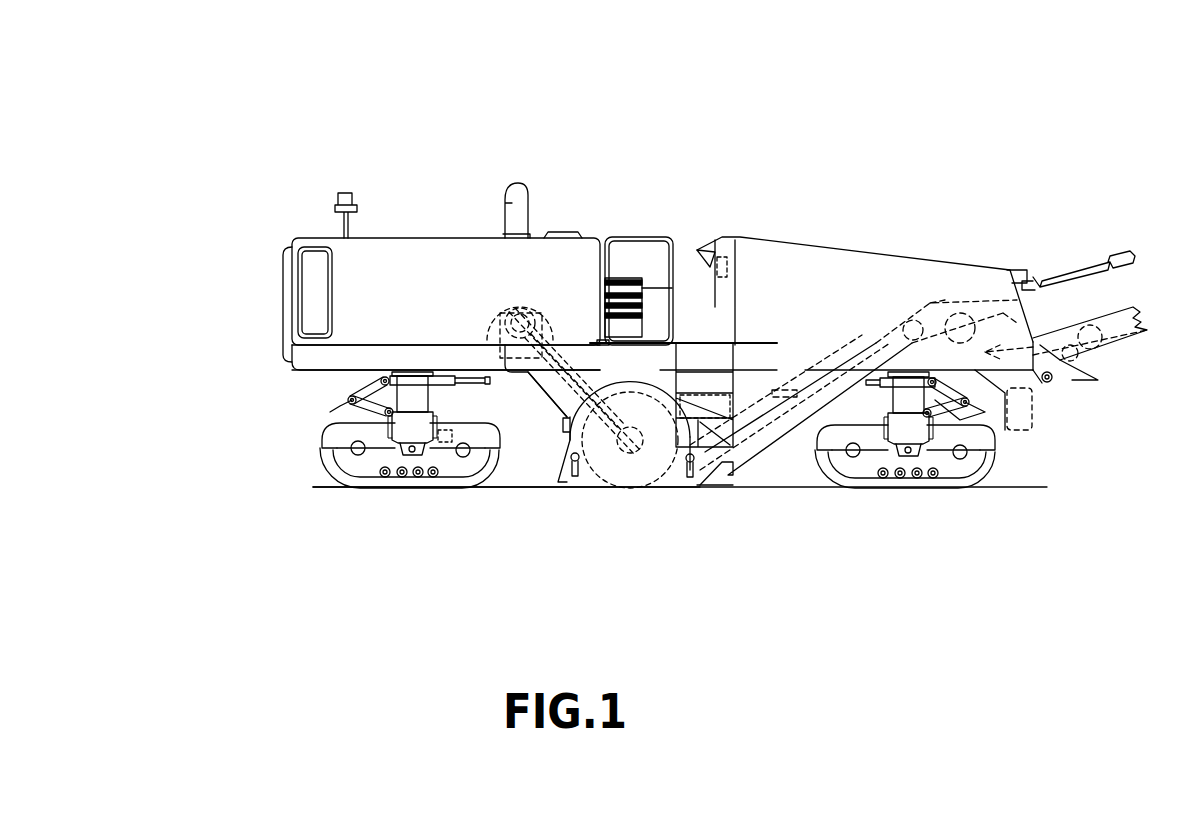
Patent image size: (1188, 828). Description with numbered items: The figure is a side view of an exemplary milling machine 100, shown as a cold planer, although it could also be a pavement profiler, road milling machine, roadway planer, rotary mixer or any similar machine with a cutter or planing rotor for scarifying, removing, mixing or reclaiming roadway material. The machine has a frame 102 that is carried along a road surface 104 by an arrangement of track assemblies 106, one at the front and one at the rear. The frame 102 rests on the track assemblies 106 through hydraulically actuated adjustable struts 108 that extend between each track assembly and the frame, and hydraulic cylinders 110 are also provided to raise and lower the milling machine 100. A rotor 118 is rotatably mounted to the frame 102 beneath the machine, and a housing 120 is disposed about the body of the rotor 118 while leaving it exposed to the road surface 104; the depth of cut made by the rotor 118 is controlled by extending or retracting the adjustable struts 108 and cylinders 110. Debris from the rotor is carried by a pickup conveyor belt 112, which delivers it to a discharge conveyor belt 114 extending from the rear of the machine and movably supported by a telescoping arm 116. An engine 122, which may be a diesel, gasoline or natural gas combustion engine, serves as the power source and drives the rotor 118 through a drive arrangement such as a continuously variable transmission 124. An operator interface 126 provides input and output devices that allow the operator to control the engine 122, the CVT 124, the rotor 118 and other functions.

The milling machine 100 is at (886, 98).
The frame 102 is at (308, 371).
The road surface 104 is at (323, 483).
The track assemblies 106 is at (281, 462).
The adjustable struts 108 is at (413, 396).
The hydraulic cylinders 110 is at (347, 403).
The pickup conveyor belt 112 is at (775, 390).
The discharge conveyor belt 114 is at (1090, 333).
The telescoping arm 116 is at (1078, 270).
The rotor 118 is at (592, 492).
The housing 120 is at (633, 388).
The engine 122 is at (533, 288).
The continuously variable transmission (CVT) 124 is at (521, 462).
The operator interface 126 is at (703, 248).